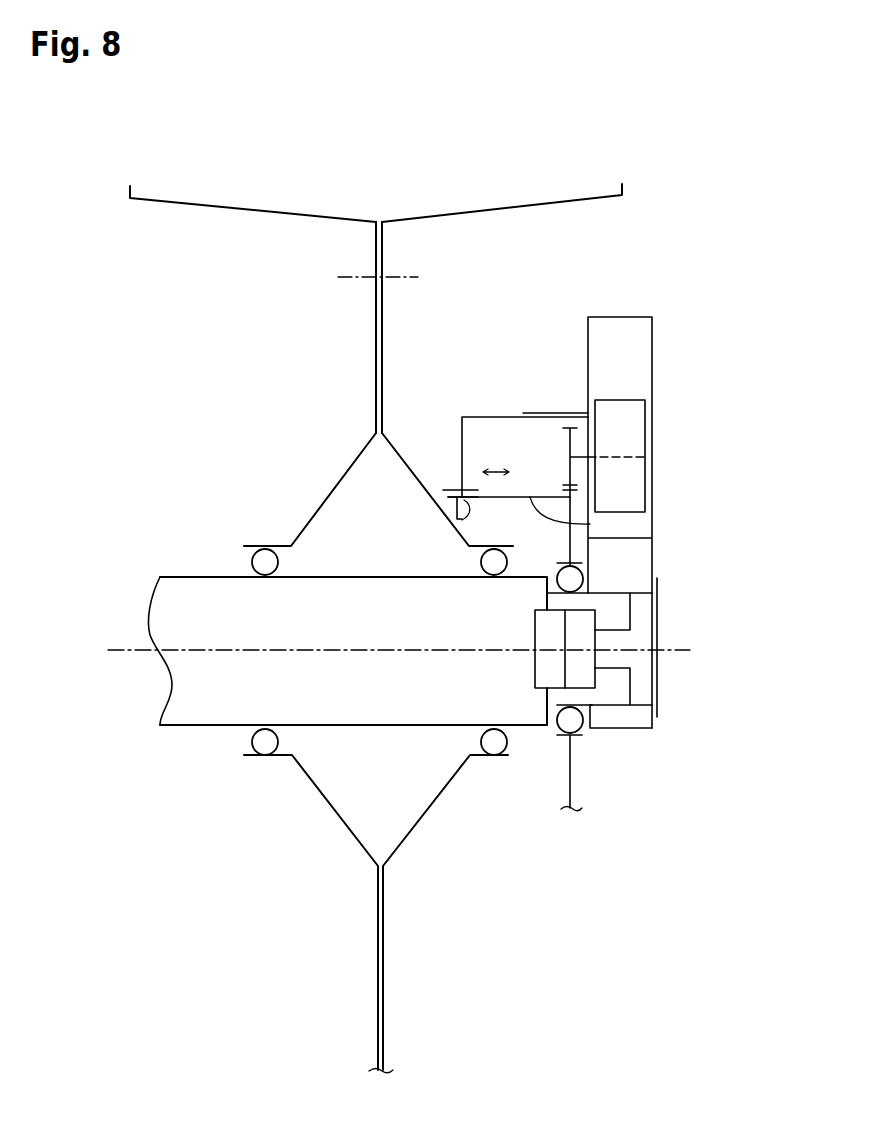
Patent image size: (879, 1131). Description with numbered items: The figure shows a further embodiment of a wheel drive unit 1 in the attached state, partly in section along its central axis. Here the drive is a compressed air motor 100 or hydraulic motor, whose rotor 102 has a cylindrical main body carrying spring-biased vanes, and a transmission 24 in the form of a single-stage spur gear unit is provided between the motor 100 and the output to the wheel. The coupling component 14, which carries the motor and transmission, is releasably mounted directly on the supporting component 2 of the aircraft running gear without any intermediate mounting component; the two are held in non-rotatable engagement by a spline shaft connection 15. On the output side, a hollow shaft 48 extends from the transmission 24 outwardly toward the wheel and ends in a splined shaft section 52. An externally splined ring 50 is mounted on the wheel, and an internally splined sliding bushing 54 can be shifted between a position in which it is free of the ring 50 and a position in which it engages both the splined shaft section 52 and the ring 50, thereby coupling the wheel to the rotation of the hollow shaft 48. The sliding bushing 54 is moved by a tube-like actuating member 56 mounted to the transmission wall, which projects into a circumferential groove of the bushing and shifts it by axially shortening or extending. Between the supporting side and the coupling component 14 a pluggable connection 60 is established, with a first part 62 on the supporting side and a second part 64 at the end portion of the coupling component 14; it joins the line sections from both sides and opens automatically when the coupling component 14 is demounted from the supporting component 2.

The wheel drive unit 1 is at (554, 316).
The supporting component 2 is at (210, 710).
The coupling component 14 is at (642, 693).
The spline shaft connection 15 is at (613, 593).
The transmission 24 is at (556, 470).
The hollow shaft 48 is at (590, 524).
The ring 50 is at (458, 497).
The splined shaft section 52 is at (460, 519).
The sliding bushing 54 is at (443, 490).
The actuating member 56 is at (478, 417).
The pluggable connection 60 is at (555, 700).
The first part 62 is at (553, 670).
The second part 64 is at (578, 670).
The compressed air motor 100 is at (674, 324).
The rotor 102 is at (632, 444).